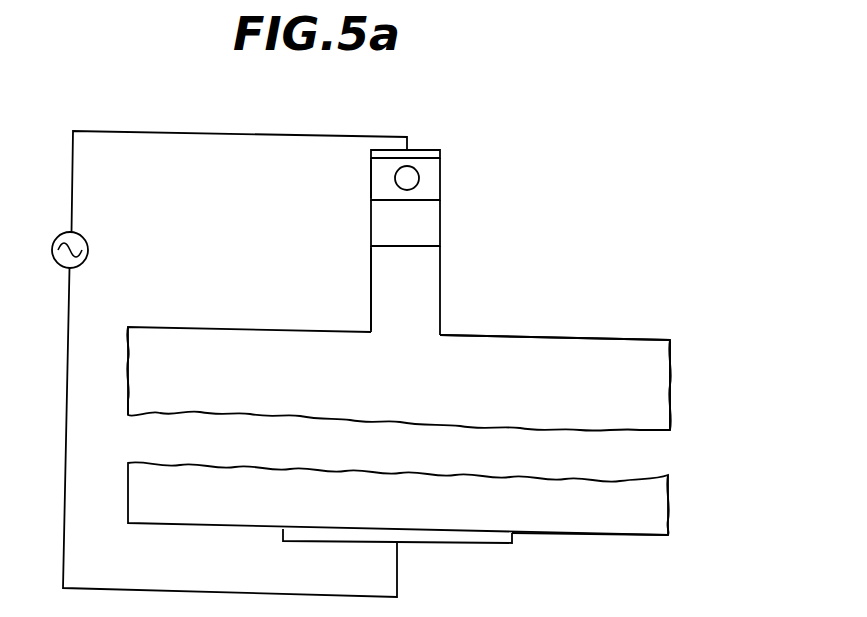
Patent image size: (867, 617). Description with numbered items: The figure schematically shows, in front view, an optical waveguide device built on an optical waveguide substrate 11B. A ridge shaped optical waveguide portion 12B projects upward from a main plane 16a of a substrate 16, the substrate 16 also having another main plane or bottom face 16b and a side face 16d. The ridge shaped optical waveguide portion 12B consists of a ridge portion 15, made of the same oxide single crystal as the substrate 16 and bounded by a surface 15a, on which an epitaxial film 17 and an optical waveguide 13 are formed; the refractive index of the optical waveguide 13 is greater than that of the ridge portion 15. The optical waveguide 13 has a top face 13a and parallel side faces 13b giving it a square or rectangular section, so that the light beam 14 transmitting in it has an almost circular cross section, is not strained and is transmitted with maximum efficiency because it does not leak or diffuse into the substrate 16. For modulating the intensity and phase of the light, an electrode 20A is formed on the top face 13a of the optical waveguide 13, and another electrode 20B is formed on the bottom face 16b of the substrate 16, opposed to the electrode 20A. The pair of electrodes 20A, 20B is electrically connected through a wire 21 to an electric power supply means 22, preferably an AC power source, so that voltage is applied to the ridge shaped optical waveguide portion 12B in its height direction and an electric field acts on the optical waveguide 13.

The optical waveguide substrate 11B is at (638, 282).
The ridge shaped optical waveguide portion 12B is at (468, 158).
The optical waveguide 13 is at (433, 172).
The top face 13a is at (431, 152).
The side faces 13b is at (371, 187).
The light beam 14 is at (412, 180).
The ridge portion 15 is at (440, 283).
The surface of ridge portion 15a is at (371, 287).
The substrate 16 is at (648, 335).
The main plane 16a is at (583, 337).
The bottom face 16b is at (543, 535).
The side face 16d is at (650, 385).
The epitaxial film 17 is at (423, 225).
The electrode 20A is at (426, 150).
The electrode 20B is at (438, 543).
The wire 21 is at (235, 137).
The electric power supply means 22 is at (88, 248).